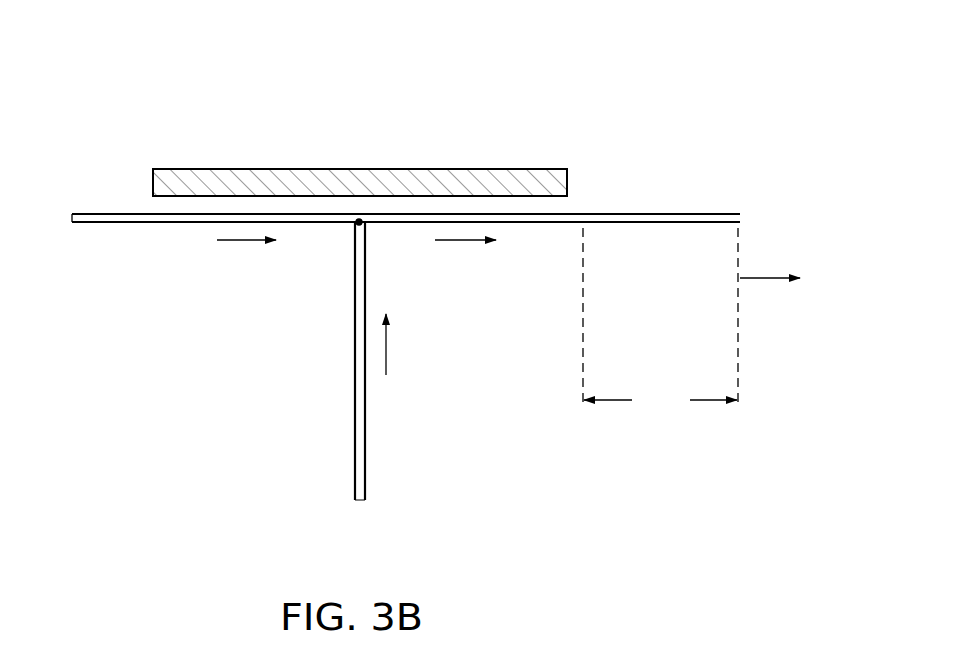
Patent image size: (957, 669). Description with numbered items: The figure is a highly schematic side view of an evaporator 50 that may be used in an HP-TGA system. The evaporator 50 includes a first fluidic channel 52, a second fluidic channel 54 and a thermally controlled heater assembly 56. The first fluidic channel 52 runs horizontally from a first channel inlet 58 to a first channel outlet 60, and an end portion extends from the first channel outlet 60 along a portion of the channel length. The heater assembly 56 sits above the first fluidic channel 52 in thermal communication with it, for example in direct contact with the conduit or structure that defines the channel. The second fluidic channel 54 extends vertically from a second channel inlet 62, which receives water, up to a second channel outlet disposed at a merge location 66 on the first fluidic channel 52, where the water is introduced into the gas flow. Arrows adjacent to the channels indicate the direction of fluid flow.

The evaporator 50 is at (660, 94).
The first fluidic channel 52 is at (103, 213).
The second fluidic channel 54 is at (354, 423).
The thermally controlled heater assembly 56 is at (440, 168).
The first channel inlet 58 is at (66, 218).
The first channel outlet 60 is at (744, 218).
The second channel inlet 62 is at (359, 503).
The merge location 66 is at (359, 222).